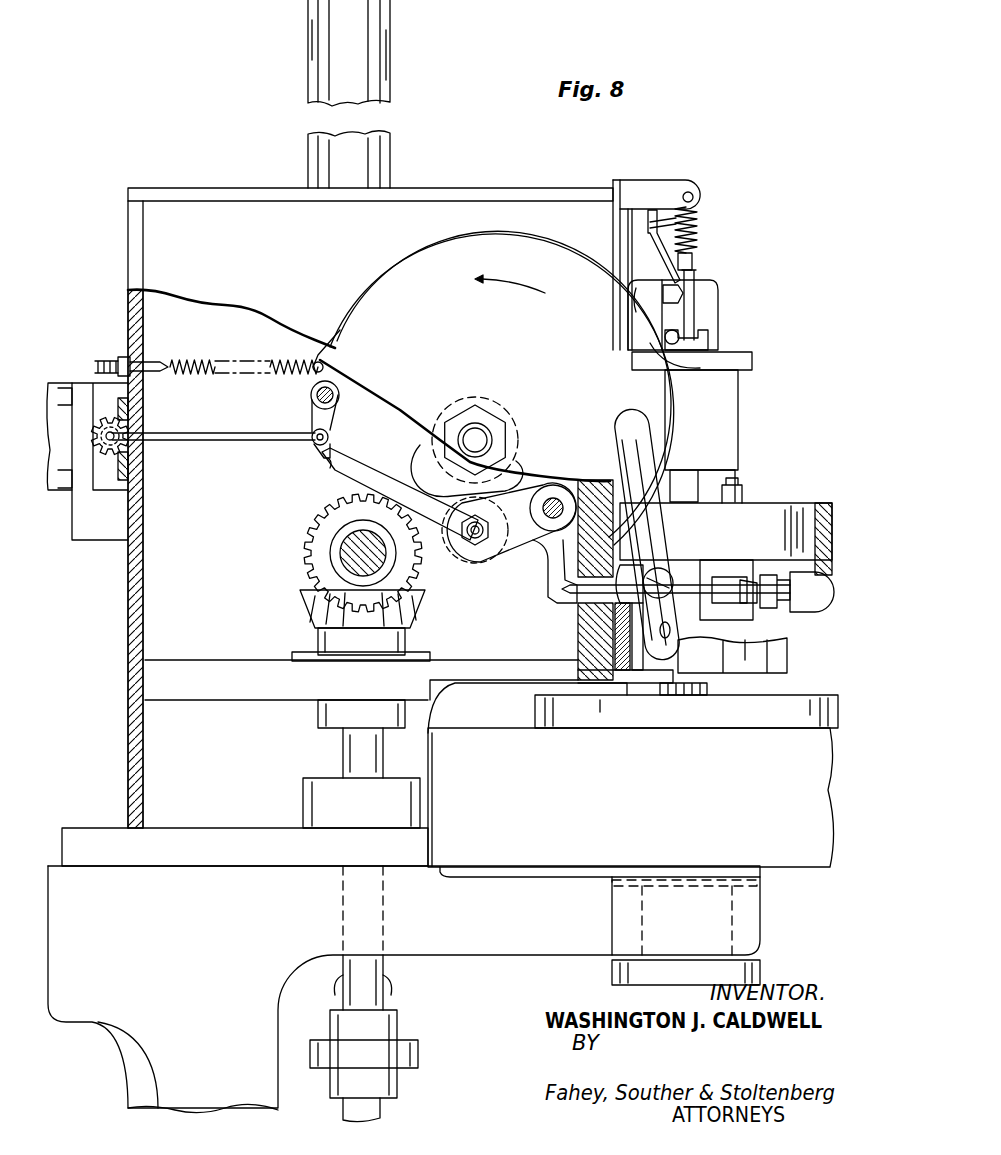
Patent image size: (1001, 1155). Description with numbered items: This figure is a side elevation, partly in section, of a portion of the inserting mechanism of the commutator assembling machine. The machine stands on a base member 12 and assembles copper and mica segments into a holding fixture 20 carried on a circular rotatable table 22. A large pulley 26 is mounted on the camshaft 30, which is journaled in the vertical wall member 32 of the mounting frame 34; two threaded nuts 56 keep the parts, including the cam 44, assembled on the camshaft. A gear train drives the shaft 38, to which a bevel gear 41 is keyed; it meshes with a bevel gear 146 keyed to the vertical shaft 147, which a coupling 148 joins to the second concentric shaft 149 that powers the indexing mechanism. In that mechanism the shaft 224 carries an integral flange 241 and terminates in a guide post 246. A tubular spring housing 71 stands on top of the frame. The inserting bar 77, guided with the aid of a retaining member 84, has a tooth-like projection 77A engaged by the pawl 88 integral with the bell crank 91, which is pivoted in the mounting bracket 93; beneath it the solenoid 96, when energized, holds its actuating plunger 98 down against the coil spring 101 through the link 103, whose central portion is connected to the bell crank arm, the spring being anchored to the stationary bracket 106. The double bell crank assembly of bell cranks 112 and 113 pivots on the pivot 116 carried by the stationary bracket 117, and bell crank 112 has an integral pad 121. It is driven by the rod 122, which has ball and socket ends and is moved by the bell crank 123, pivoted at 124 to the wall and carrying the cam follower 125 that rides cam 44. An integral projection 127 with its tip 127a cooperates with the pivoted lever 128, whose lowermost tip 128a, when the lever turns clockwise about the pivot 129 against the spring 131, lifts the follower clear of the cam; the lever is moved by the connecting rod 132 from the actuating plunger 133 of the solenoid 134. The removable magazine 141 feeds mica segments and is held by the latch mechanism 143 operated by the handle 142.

The base member 12 is at (540, 942).
The holding fixture 20 is at (768, 715).
The rotatable table 22 is at (805, 852).
The large pulley 26 is at (386, 305).
The camshaft 30 is at (482, 435).
The vertical wall member 32 is at (245, 205).
The mounting frame 34 is at (186, 186).
The shaft 38 is at (345, 560).
The bevel gear 41 is at (310, 553).
The cam 44 is at (420, 438).
The threaded nut 56 is at (468, 418).
The tubular spring housing 71 is at (385, 52).
The inserting bar 77 is at (660, 478).
The tooth-like projection 77A is at (690, 214).
The retaining member 84 is at (690, 480).
The pawl 88 is at (700, 222).
The bell crank 91 is at (698, 265).
The mounting bracket 93 is at (705, 368).
The solenoid 96 is at (735, 395).
The actuating plunger 98 is at (710, 332).
The coil spring 101 is at (700, 242).
The link 103 is at (690, 304).
The stationary bracket 106 is at (658, 182).
The bell crank 112 is at (778, 595).
The bell crank 113 is at (725, 565).
The pivot 116 is at (740, 490).
The stationary bracket 117 is at (800, 505).
The integral pad 121 is at (822, 605).
The rod 122 is at (672, 580).
The bell crank 123 is at (530, 530).
The pivot 124 is at (553, 498).
The cam follower 125 is at (460, 555).
The integral projection 127 is at (345, 470).
The tip 127a is at (326, 462).
The pivoted lever 128 is at (332, 418).
The lowermost tip 128a is at (330, 455).
The pivot 129 is at (312, 397).
The spring 131 is at (288, 355).
The connecting rod 132 is at (220, 408).
The actuating plunger 133 is at (112, 445).
The solenoid 134 is at (55, 505).
The removable magazine 141 is at (740, 695).
The handle 142 is at (625, 440).
The latch mechanism 143 is at (596, 637).
The bevel gear 146 is at (312, 622).
The vertical shaft 147 is at (345, 760).
The coupling 148 is at (405, 1050).
The second concentric shaft 149 is at (380, 1112).
The shaft 224 is at (728, 920).
The integral flange 241 is at (755, 878).
The guide post 246 is at (676, 692).